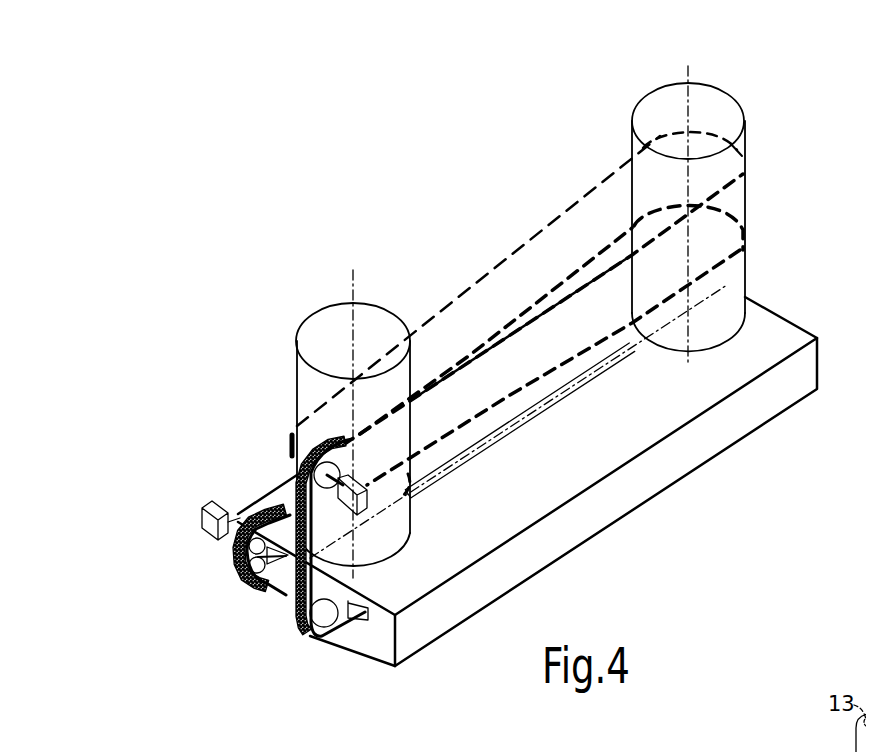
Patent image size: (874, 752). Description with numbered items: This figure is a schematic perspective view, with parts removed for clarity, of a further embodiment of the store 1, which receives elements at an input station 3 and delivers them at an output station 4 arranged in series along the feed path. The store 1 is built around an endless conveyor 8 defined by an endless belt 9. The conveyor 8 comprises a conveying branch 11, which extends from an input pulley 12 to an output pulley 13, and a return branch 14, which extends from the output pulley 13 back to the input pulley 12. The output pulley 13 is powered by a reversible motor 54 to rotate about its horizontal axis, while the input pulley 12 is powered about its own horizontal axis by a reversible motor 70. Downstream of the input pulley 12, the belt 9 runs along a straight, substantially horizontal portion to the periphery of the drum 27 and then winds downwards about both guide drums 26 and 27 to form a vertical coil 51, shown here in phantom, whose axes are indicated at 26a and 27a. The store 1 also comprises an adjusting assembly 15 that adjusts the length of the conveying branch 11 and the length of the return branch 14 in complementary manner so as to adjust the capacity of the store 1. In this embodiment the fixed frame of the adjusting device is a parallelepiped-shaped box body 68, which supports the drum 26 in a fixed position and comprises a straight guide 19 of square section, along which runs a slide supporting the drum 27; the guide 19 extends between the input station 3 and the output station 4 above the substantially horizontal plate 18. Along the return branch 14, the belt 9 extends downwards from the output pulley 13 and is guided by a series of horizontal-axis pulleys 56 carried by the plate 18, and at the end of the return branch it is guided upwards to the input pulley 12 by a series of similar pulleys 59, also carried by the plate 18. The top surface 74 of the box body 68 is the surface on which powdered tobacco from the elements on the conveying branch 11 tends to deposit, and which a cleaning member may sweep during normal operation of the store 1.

The store 1 is at (673, 525).
The input station 3 is at (286, 441).
The output station 4 is at (233, 505).
The endless conveyor 8 is at (313, 661).
The endless belt 9 is at (300, 610).
The conveying branch 11 is at (483, 266).
The input pulley 12 is at (318, 486).
The output pulley 13 is at (277, 573).
The return branch 14 is at (778, 435).
The adjusting assembly 15 is at (772, 224).
The plate 18 is at (793, 341).
The straight guide 19 is at (612, 378).
The guide drum 26 is at (320, 337).
The axis of first cylinder 26a is at (360, 290).
The guide drum 27 is at (727, 112).
The axis of second cylinder 27a is at (695, 80).
The vertical coil 51 is at (556, 197).
The reversible motor 54 is at (210, 525).
The pulleys 56 is at (258, 578).
The pulleys 59 is at (320, 642).
The box body 68 is at (583, 530).
The reversible motor 70 is at (368, 503).
The top surface 74 is at (760, 340).